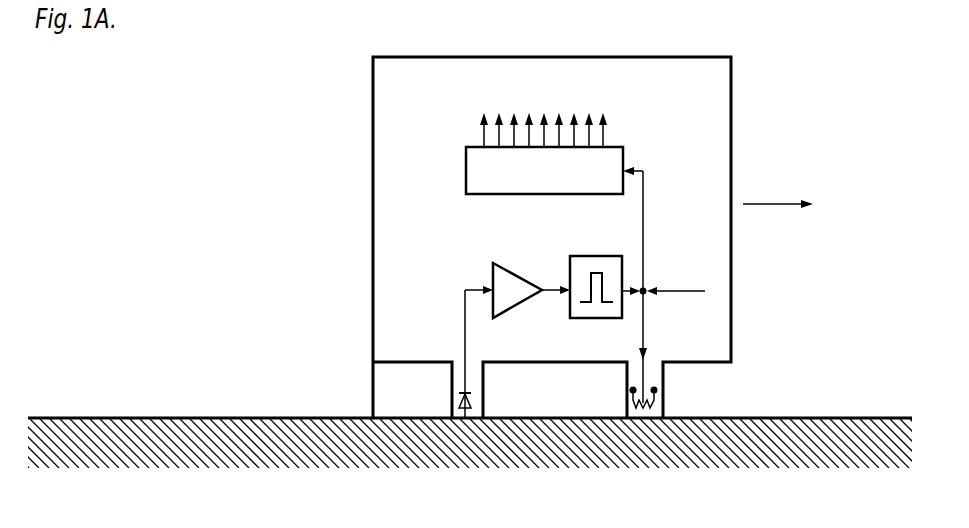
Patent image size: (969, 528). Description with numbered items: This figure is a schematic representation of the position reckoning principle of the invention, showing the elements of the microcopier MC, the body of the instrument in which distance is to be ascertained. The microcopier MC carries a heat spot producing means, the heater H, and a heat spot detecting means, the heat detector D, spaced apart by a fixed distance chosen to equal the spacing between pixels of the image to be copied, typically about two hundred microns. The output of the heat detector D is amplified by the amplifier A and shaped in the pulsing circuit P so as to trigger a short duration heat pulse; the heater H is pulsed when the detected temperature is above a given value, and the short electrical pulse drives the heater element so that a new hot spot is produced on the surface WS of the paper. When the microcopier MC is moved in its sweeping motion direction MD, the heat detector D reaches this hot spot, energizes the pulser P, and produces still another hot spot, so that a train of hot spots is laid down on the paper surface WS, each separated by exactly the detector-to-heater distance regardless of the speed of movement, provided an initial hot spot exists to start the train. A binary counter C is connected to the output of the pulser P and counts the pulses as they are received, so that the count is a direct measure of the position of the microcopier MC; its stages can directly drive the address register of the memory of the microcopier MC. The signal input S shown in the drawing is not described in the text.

The microcopier MC is at (731, 104).
The sweeping motion direction MD is at (762, 197).
The binary counter C is at (554, 153).
The amplifier A is at (507, 265).
The pulsing circuit P is at (598, 256).
The start signal S is at (680, 292).
The heat spot detecting means D is at (450, 373).
The heat spot producing means H is at (664, 384).
The surface of the paper WS is at (755, 418).